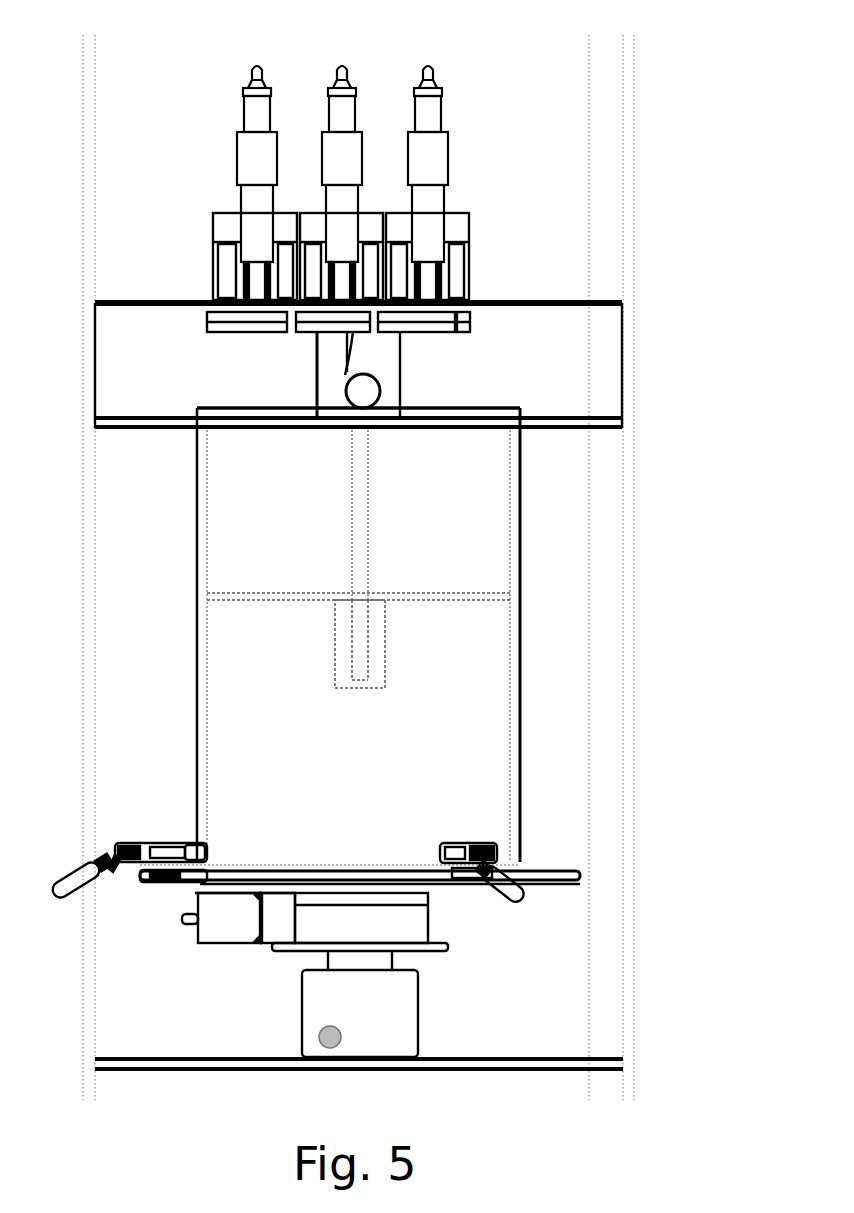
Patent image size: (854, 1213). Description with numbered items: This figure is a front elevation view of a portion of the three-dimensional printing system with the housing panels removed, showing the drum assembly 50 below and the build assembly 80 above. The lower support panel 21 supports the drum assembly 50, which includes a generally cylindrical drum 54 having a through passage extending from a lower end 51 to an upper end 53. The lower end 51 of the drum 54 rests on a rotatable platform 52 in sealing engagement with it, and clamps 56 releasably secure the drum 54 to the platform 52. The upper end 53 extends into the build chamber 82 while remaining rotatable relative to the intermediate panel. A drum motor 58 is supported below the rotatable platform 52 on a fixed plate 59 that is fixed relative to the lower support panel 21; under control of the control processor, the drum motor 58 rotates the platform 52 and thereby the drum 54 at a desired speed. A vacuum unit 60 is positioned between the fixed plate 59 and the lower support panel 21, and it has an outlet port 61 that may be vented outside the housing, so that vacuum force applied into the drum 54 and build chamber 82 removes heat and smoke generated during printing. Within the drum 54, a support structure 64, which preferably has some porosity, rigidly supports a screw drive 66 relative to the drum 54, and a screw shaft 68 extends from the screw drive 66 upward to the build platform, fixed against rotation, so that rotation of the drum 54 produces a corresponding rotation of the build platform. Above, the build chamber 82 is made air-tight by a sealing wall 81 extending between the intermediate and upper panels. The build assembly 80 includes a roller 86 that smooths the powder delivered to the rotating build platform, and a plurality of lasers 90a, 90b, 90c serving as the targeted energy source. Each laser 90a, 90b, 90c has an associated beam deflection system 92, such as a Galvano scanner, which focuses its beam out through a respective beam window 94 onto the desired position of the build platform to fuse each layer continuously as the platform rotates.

The lower support panel 21 is at (575, 1058).
The drum assembly 50 is at (530, 738).
The lower end 51 is at (425, 880).
The rotatable platform 52 is at (560, 880).
The upper end 53 is at (490, 407).
The drum 54 is at (520, 650).
The clamps 56 is at (160, 843).
The drum motor 58 is at (230, 930).
The fixed plate 59 is at (295, 947).
The vacuum unit 60 is at (395, 1008).
The outlet port 61 is at (328, 1040).
The support structure 64 is at (455, 594).
The screw drive 66 is at (350, 648).
The screw shaft 68 is at (365, 482).
The build assembly 80 is at (510, 280).
The sealing wall 81 is at (622, 319).
The build chamber 82 is at (137, 345).
The roller 86 is at (372, 385).
The laser 90a is at (245, 158).
The laser 90b is at (348, 155).
The laser 90c is at (433, 150).
The beam deflection system 92 is at (215, 245).
The beam window 94 is at (248, 320).